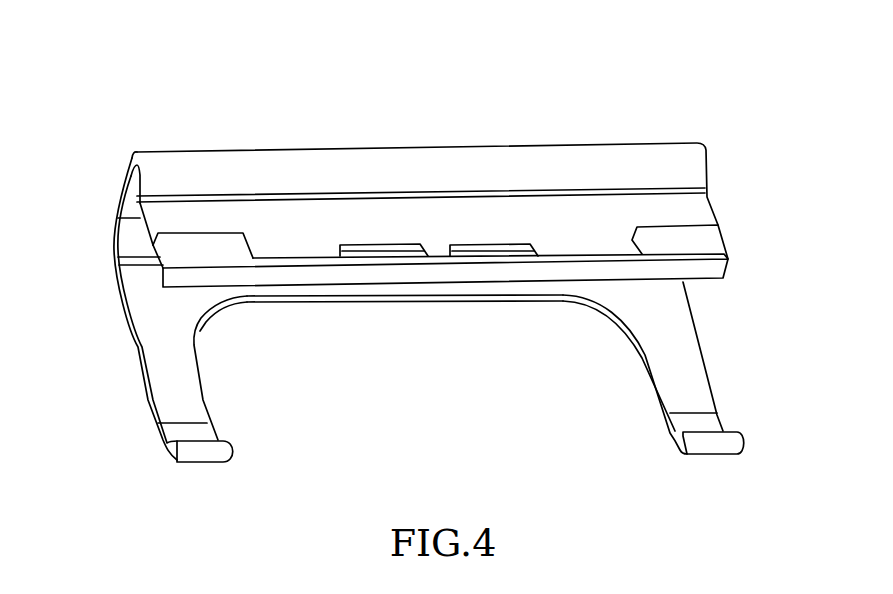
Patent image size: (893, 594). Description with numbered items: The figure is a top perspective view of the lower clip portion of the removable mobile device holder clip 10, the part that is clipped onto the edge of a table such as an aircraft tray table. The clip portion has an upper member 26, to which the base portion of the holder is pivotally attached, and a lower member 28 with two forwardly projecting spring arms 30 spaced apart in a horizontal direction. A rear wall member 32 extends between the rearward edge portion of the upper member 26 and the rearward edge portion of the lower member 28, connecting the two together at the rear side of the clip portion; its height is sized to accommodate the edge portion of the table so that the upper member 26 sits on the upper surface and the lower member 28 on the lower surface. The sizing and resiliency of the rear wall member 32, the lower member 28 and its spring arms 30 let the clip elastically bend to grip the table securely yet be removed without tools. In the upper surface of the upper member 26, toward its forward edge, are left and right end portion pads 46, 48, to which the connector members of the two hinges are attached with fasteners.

The holder clip 10 is at (167, 67).
The upper member 26 is at (697, 208).
The lower member 28 is at (690, 300).
The spring arms 30 is at (193, 415).
The rear wall member 32 is at (122, 196).
The left end portion pad 46 is at (180, 256).
The right end portion pad 48 is at (707, 240).